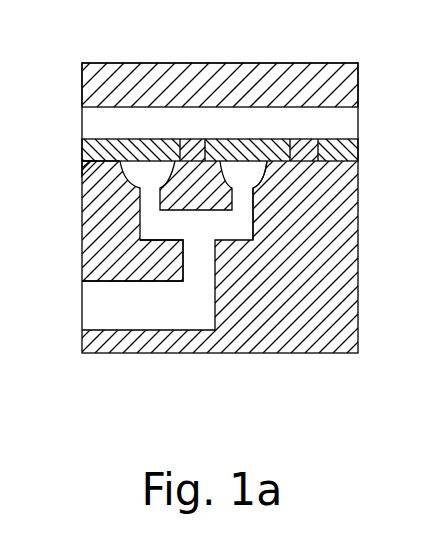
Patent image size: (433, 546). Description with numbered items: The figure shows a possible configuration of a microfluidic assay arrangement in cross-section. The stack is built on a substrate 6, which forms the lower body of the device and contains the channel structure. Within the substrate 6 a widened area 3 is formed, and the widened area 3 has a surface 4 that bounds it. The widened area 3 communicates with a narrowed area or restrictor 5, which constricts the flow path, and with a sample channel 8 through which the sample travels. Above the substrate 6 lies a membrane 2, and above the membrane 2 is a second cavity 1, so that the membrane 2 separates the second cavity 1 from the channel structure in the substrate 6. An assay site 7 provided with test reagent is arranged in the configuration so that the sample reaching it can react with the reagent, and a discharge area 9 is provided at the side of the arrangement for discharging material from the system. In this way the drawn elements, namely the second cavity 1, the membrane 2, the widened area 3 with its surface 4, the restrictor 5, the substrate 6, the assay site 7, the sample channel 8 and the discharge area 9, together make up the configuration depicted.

The second cavity 1 is at (244, 122).
The membrane 2 is at (347, 150).
The widened area 3 is at (247, 172).
The surface of the widened area 4 is at (265, 183).
The narrowed area or restrictor 5 is at (240, 205).
The substrate 6 is at (287, 280).
The assay site 7 is at (190, 140).
The sample channel 8 is at (82, 304).
The discharge area 9 is at (82, 178).